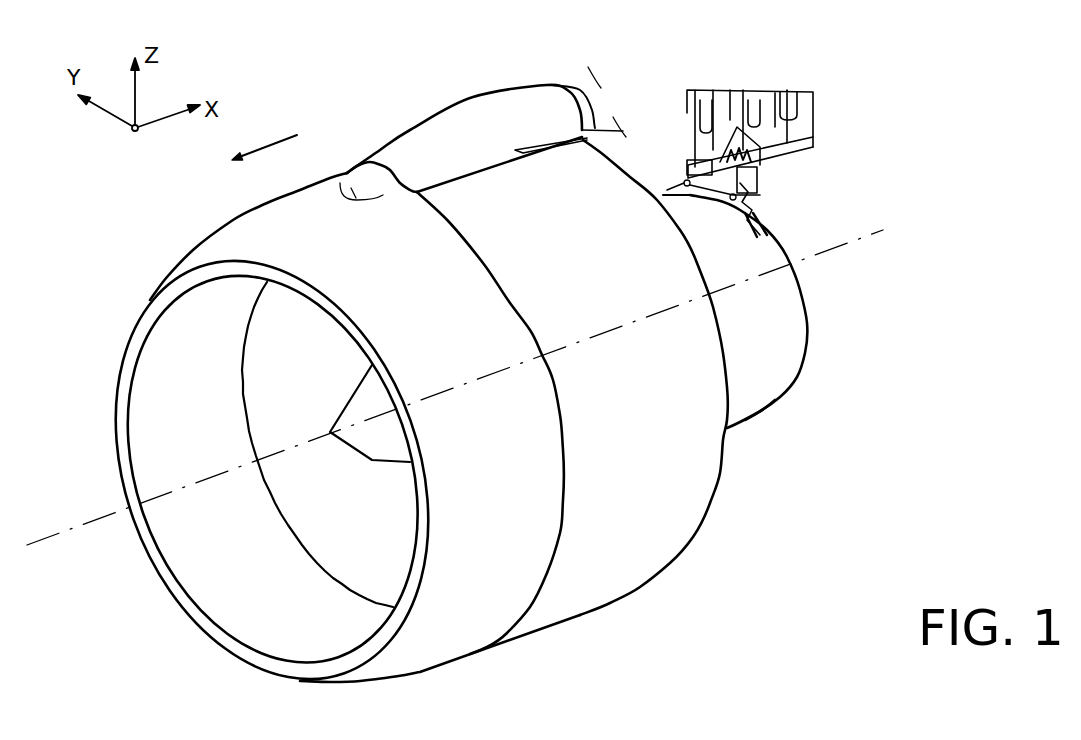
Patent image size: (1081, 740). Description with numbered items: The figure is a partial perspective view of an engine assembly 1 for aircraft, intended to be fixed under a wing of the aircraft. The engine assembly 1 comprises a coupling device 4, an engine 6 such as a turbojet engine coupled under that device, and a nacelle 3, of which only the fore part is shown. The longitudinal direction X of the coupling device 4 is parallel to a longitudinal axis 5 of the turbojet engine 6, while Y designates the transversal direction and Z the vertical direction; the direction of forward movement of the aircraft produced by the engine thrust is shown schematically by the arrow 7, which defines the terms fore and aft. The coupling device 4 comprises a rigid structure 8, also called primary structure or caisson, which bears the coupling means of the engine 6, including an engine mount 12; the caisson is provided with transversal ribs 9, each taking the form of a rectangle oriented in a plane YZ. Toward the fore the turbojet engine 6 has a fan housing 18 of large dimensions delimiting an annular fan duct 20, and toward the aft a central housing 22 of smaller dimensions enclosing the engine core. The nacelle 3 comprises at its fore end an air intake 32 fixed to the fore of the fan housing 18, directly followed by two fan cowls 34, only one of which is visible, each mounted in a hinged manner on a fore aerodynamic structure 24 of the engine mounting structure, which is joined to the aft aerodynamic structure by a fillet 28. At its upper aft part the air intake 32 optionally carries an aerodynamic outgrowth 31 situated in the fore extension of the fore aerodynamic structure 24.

The engine assembly 1 is at (846, 63).
The nacelle 3 is at (798, 571).
The coupling device 4 is at (794, 166).
The longitudinal axis 5 is at (93, 514).
The engine 6 is at (770, 414).
The arrow 7 is at (273, 143).
The rigid structure 8 is at (814, 137).
The transversal ribs 9 is at (773, 93).
The engine mount 12 is at (753, 190).
The fan housing 18 is at (241, 352).
The annular fan duct 20 is at (267, 413).
The central housing 22 is at (780, 323).
The fore aerodynamic structure 24 is at (410, 119).
The fillet 28 is at (580, 77).
The aerodynamic outgrowth 31 is at (357, 197).
The air intake 32 is at (447, 640).
The fan cowls 34 is at (587, 588).